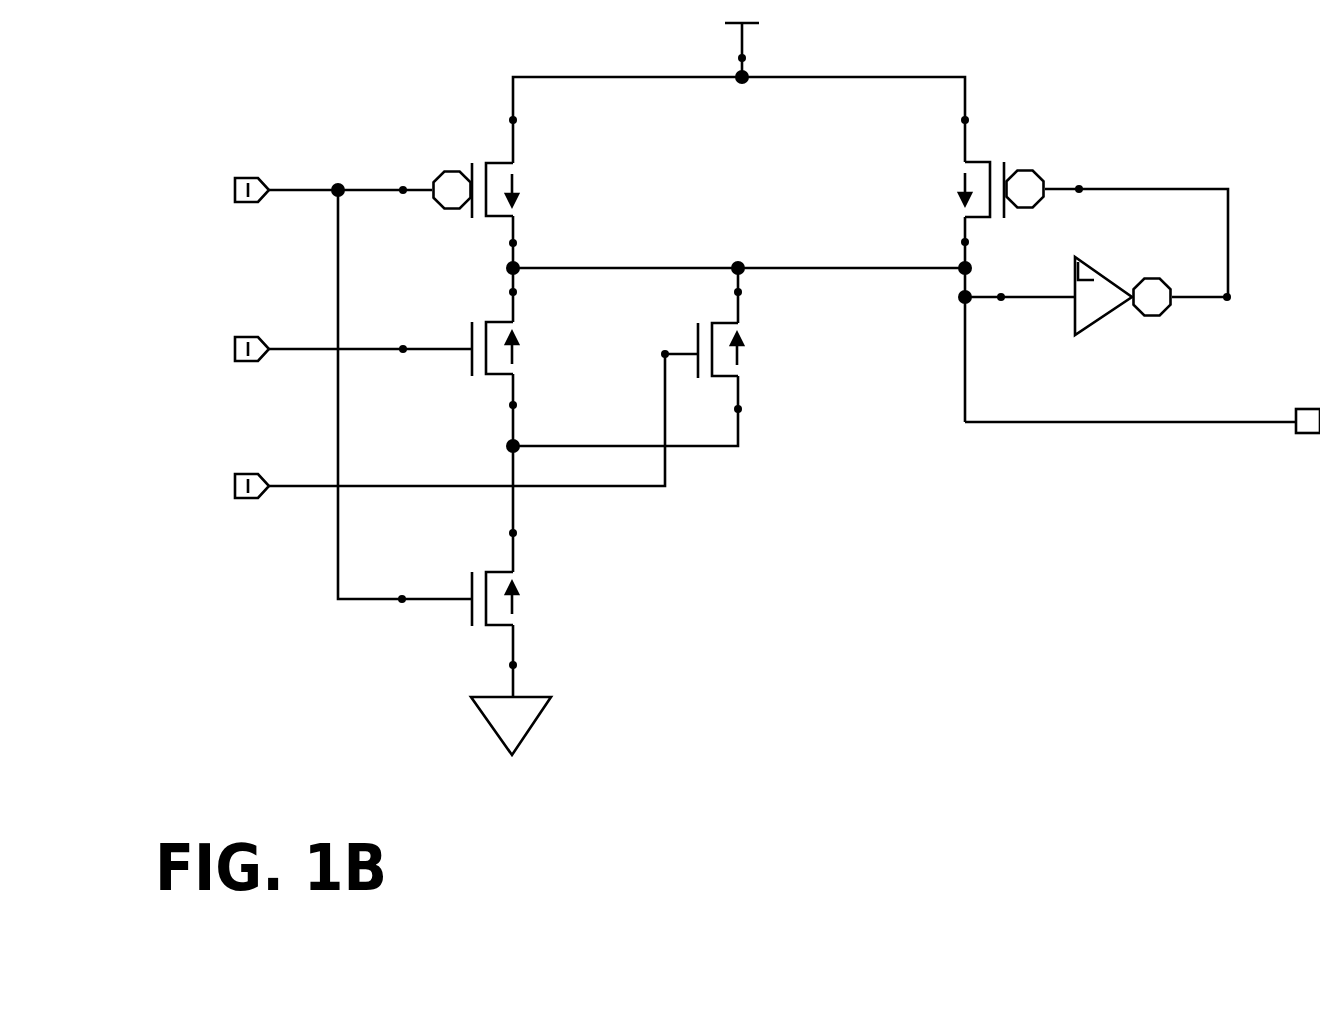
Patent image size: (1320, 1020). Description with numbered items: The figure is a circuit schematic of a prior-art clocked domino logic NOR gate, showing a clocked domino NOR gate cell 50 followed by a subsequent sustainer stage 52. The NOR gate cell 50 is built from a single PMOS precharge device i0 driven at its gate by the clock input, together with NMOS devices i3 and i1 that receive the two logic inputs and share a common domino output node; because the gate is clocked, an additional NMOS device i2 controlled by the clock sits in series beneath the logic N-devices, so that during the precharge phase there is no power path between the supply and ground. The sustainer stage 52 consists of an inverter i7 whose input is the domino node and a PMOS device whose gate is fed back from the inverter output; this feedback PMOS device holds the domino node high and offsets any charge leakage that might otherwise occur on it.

The clocked domino NOR gate cell 50 is at (510, 68).
The sustainer stage 52 is at (1037, 160).
The precharge PMOS transistor i0 is at (495, 173).
The NMOS evaluation transistor (in1) i3 is at (513, 349).
The NMOS evaluation transistor (in2) i1 is at (740, 350).
The NMOS clock footer transistor i2 is at (514, 599).
The output inverter i7 is at (1130, 300).